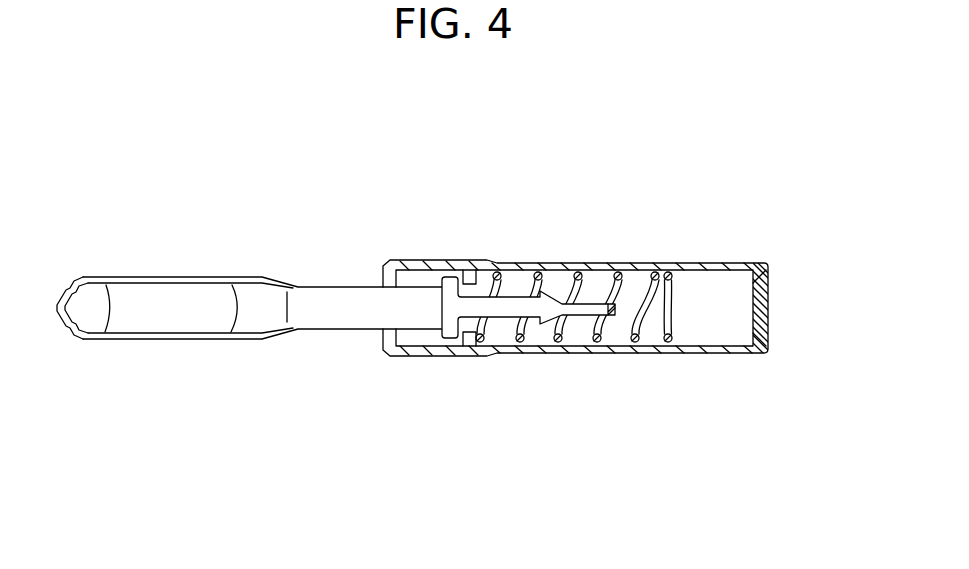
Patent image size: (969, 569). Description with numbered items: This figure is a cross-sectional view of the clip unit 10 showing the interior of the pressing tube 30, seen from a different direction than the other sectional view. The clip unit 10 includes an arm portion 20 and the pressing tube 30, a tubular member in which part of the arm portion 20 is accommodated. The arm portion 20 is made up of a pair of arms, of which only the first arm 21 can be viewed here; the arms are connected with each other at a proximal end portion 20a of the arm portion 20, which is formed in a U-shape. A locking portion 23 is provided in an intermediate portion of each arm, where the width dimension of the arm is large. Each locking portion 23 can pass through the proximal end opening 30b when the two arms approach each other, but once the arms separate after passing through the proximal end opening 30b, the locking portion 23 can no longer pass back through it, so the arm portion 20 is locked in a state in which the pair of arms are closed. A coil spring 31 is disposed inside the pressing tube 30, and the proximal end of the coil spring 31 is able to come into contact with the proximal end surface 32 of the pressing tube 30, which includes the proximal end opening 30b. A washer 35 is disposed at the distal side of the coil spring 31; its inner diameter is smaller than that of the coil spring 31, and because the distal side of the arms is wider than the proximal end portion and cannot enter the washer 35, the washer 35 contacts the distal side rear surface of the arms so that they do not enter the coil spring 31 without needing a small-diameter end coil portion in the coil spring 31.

The clip unit 10 is at (690, 203).
The arm portion 20 is at (191, 262).
The proximal end portion 20a is at (615, 316).
The first arm 21 is at (130, 291).
The locking portion 23 is at (547, 291).
The pressing tube 30 is at (469, 260).
The proximal end opening 30b is at (757, 333).
The coil spring 31 is at (647, 334).
The proximal end surface 32 is at (757, 338).
The washer 35 is at (466, 336).